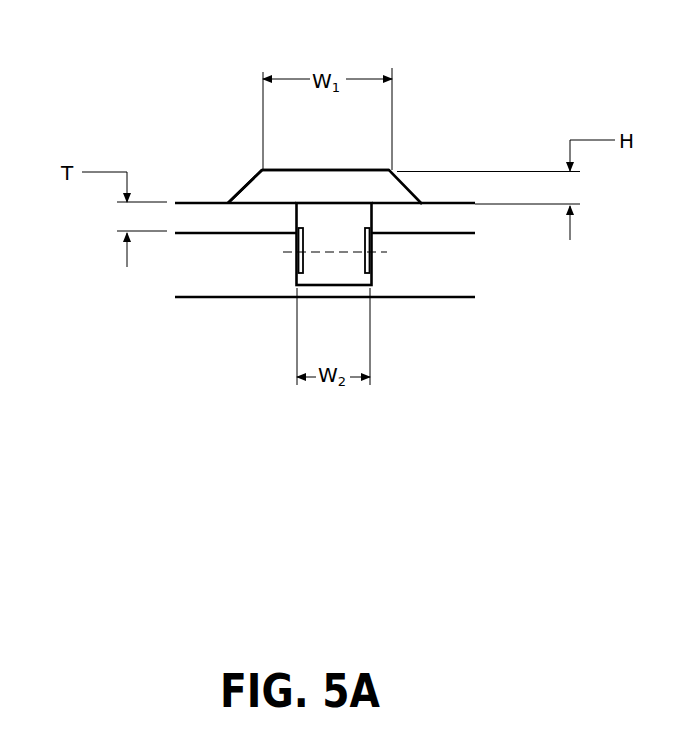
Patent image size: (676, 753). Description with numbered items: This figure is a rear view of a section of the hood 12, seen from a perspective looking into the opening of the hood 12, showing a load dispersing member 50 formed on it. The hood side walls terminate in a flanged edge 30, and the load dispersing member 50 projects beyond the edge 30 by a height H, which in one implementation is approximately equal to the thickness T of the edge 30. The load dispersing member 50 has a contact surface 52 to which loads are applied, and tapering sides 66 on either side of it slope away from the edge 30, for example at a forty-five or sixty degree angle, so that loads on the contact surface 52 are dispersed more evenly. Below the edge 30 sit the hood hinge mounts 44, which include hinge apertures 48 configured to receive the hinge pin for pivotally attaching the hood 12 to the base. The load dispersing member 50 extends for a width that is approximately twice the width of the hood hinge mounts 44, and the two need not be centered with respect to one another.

The hood 12 is at (232, 297).
The edge 30 is at (452, 220).
The hood hinge mounts 44 is at (300, 273).
The hinge apertures 48 is at (378, 262).
The load dispersing member 50 is at (250, 160).
The contact surface 52 is at (364, 181).
The tapering sides 66 is at (243, 188).